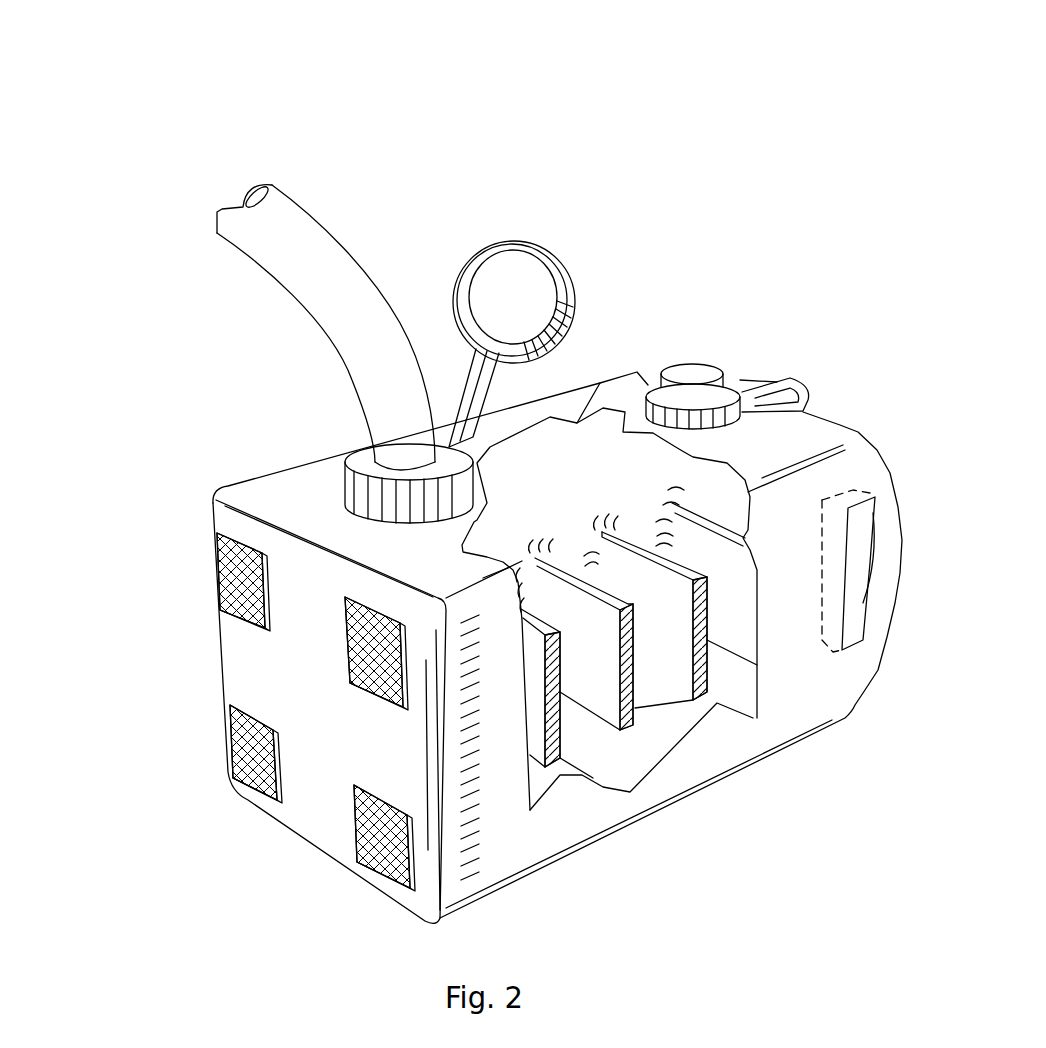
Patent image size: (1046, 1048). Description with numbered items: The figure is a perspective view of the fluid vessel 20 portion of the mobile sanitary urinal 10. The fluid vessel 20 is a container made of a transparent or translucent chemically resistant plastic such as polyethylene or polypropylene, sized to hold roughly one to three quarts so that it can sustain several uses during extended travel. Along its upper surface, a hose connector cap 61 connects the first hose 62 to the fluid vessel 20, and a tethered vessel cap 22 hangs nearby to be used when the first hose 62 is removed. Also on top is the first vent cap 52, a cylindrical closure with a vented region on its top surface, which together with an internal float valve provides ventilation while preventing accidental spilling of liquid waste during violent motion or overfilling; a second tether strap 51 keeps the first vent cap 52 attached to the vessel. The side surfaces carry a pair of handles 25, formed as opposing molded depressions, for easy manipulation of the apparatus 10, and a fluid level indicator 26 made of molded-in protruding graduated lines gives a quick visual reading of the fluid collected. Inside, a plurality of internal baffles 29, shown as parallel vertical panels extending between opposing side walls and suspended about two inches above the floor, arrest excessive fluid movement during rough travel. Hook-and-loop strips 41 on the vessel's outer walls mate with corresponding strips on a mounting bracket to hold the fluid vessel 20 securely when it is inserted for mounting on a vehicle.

The mobile sanitary urinal 10 is at (733, 147).
The fluid vessel 20 is at (887, 473).
The tethered vessel cap 22 is at (553, 253).
The handles 25 is at (857, 613).
The fluid level indicator 26 is at (465, 833).
The internal baffles 29 is at (556, 785).
The hook-and-loop strips 41 is at (357, 814).
The second tether strap 51 is at (790, 380).
The first vent cap 52 is at (707, 403).
The hose connector cap 61 is at (360, 493).
The first hose 62 is at (311, 210).